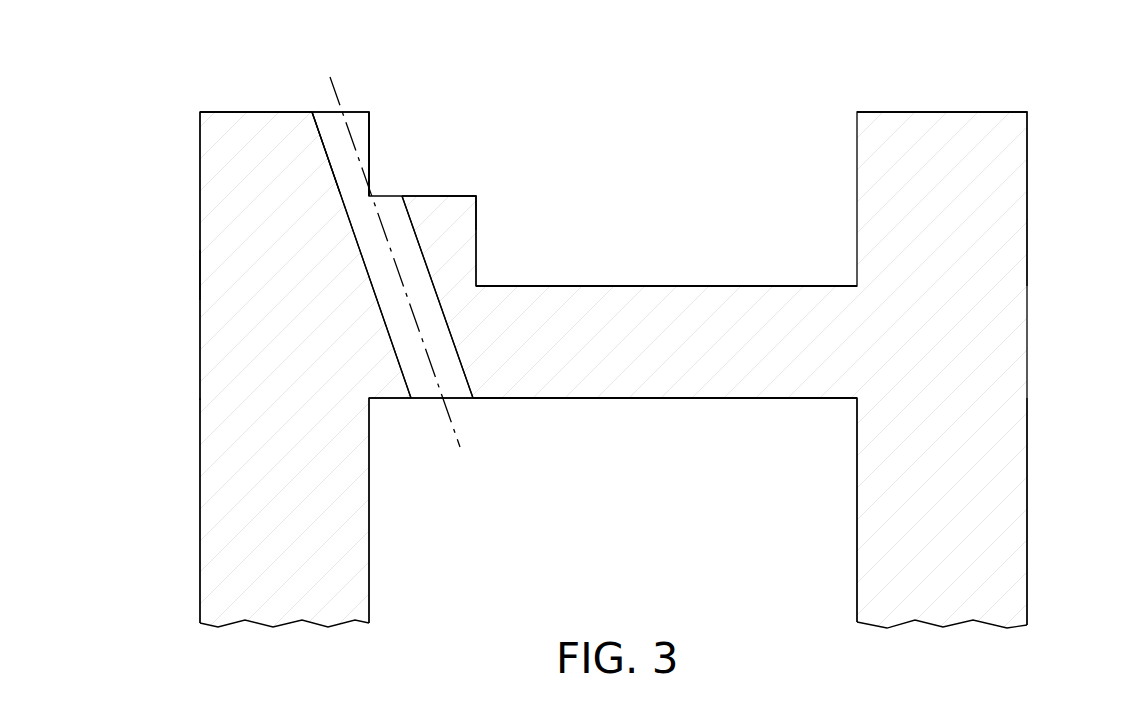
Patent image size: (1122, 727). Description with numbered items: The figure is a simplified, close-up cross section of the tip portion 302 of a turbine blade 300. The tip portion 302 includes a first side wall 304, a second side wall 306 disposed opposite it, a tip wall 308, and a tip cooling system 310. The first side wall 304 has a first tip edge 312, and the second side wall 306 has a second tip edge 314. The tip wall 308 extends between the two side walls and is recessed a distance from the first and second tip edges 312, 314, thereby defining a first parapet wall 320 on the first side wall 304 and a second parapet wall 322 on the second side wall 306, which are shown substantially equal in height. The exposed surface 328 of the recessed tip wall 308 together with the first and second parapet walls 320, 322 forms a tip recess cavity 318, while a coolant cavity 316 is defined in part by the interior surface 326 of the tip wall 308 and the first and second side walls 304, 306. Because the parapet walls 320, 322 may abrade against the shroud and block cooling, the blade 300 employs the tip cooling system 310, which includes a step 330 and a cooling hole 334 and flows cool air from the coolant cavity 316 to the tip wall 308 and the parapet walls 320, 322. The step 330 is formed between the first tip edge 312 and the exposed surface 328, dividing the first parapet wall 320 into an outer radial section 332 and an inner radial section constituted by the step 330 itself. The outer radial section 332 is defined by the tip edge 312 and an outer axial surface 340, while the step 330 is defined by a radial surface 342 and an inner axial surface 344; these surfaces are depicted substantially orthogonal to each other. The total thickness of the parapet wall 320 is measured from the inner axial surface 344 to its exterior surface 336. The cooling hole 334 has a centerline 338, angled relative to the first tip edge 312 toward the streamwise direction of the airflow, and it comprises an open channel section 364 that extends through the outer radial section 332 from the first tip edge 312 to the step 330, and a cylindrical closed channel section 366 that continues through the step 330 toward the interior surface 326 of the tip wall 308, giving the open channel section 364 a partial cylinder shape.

The turbine blade 300 is at (150, 84).
The tip portion 302 is at (990, 157).
The first side wall 304 is at (228, 488).
The second side wall 306 is at (990, 462).
The tip wall 308 is at (647, 312).
The tip cooling system 310 is at (277, 226).
The first tip edge 312 is at (222, 112).
The second tip edge 314 is at (890, 112).
The coolant cavity 316 is at (621, 551).
The tip recess cavity 318 is at (691, 180).
The first parapet wall 320 is at (277, 125).
The second parapet wall 322 is at (958, 142).
The interior surface 326 is at (682, 398).
The exposed surface 328 is at (755, 285).
The step 330 is at (458, 211).
The outer radial section 332 is at (213, 132).
The cooling hole 334 is at (365, 235).
The exterior surface 336 is at (200, 302).
The centerline 338 is at (427, 342).
The outer axial surface 340 is at (370, 118).
The radial surface 342 is at (461, 196).
The inner axial surface 344 is at (477, 249).
The open channel section 364 is at (350, 155).
The closed channel section 366 is at (390, 308).